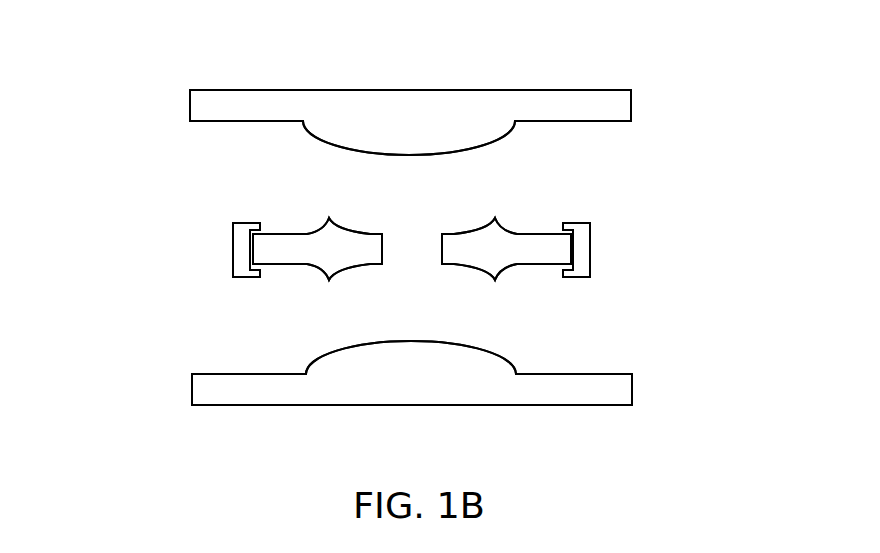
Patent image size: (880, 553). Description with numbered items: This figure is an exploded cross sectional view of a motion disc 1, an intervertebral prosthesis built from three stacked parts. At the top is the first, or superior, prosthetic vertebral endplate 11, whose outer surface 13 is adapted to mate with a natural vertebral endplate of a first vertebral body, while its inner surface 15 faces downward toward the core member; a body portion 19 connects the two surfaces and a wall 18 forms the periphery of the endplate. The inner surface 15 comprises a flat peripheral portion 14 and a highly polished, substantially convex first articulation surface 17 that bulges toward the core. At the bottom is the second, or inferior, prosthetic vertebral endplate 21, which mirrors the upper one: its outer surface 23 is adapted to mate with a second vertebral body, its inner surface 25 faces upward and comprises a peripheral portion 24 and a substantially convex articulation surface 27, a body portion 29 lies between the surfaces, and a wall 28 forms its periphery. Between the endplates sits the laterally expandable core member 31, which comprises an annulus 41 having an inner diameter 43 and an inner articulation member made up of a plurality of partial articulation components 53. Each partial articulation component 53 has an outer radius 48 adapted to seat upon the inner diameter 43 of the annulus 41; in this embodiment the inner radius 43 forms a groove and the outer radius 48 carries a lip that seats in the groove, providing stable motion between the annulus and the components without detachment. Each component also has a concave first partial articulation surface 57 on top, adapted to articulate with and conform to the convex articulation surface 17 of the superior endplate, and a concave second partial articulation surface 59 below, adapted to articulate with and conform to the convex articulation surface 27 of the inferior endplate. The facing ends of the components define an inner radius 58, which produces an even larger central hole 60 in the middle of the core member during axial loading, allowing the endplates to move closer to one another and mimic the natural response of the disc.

The motion disc 1 is at (130, 28).
The first prosthetic vertebral endplate 11 is at (692, 97).
The outer surface 13 is at (515, 90).
The peripheral portion 14 is at (227, 120).
The inner surface 15 is at (598, 120).
The first articulation surface 17 is at (502, 138).
The wall 18 is at (190, 105).
The body portion 19 is at (253, 103).
The second prosthetic vertebral endplate 21 is at (693, 388).
The outer surface 23 is at (595, 407).
The peripheral portion 24 is at (233, 372).
The inner surface 25 is at (593, 373).
The first articulation surface 27 is at (506, 355).
The wall 28 is at (190, 380).
The body portion 29 is at (253, 392).
The laterally expandable core member 31 is at (142, 251).
The annulus 41 is at (573, 227).
The inner diameter 43 is at (573, 243).
The outer radius 48 is at (253, 252).
The partial articulation component 53 is at (316, 259).
The first partial articulation surface 57 is at (343, 228).
The inner radius 58 is at (442, 248).
The second partial articulation surface 59 is at (343, 269).
The central hole 60 is at (401, 306).